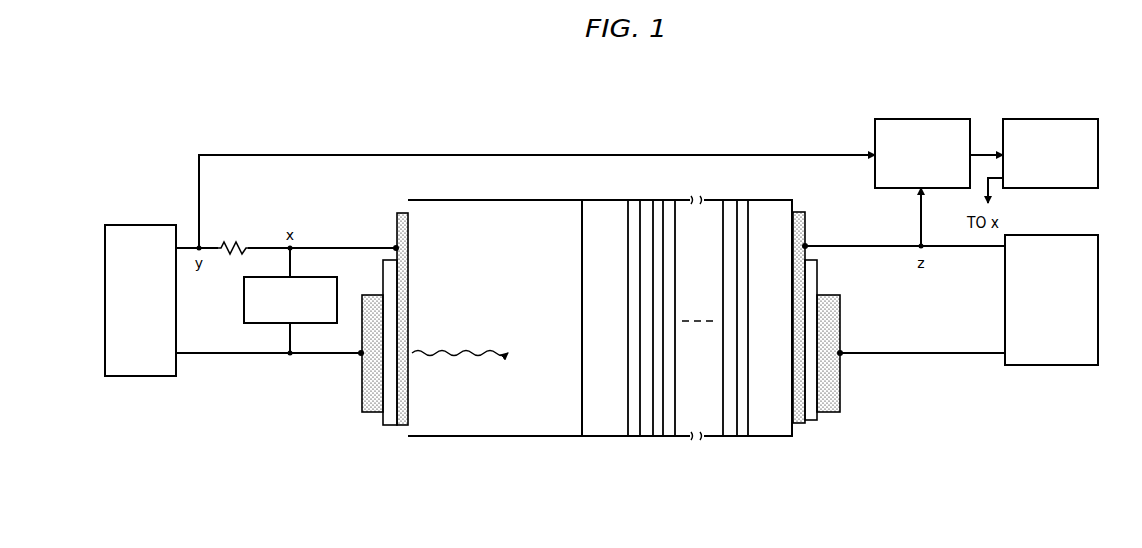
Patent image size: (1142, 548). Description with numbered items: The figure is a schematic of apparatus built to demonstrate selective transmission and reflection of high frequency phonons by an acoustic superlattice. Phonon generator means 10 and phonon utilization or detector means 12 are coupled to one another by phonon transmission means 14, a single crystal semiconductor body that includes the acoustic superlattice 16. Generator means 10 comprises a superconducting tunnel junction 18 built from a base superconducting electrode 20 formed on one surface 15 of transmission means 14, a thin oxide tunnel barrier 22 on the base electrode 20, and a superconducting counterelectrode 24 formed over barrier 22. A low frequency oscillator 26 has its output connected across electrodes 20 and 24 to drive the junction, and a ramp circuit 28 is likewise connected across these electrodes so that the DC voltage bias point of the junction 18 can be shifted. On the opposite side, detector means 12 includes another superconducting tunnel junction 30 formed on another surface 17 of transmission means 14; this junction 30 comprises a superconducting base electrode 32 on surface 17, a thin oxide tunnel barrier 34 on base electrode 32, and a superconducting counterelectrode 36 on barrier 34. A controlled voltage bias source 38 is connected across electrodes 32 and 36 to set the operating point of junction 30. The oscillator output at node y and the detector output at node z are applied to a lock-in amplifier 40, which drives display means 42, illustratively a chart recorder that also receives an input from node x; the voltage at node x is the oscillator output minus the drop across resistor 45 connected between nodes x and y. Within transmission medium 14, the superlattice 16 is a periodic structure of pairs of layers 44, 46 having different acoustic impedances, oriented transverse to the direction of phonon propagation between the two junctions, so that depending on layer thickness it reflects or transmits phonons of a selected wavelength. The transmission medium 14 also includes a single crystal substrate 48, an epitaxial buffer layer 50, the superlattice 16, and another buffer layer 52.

The phonon generator means 10 is at (107, 428).
The phonon utilization means 12 is at (1132, 429).
The phonon transmission means 14 is at (512, 438).
The surface of transmission means 15 is at (408, 205).
The acoustic superlattice 16 is at (750, 440).
The surface of transmission means 17 is at (795, 207).
The superconducting tunnel junction 18 is at (330, 346).
The base superconducting electrode 20 is at (408, 400).
The thin oxide tunnel barrier 22 is at (389, 418).
The superconducting counterelectrode 24 is at (362, 393).
The low frequency oscillator 26 is at (105, 337).
The ramp circuit 28 is at (246, 313).
The superconducting tunnel junction 30 is at (856, 323).
The superconducting base electrode 32 is at (793, 387).
The thin oxide tunnel barrier 34 is at (817, 417).
The superconducting counterelectrode 36 is at (840, 392).
The controlled voltage bias source 38 is at (1098, 265).
The lock-in amplifier 40 is at (940, 119).
The display means 42 is at (1069, 119).
The superlattice layer 44 is at (628, 197).
The resistor 45 is at (241, 250).
The superlattice layer 46 is at (675, 197).
The single crystal substrate 48 is at (560, 432).
The epitaxial buffer layer 50 is at (607, 432).
The buffer layer 52 is at (773, 428).